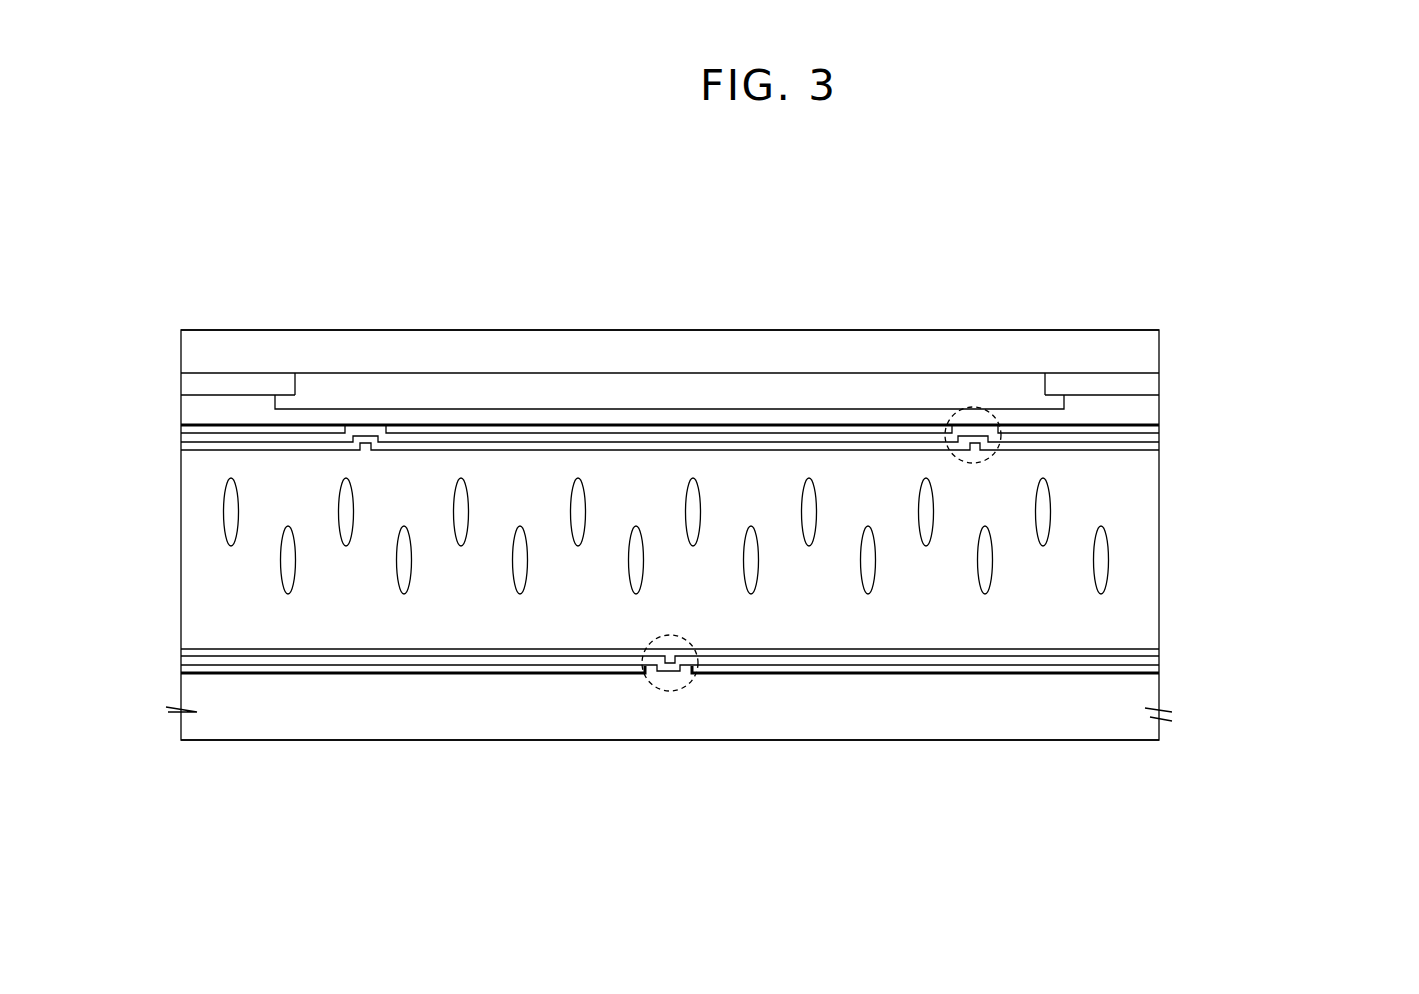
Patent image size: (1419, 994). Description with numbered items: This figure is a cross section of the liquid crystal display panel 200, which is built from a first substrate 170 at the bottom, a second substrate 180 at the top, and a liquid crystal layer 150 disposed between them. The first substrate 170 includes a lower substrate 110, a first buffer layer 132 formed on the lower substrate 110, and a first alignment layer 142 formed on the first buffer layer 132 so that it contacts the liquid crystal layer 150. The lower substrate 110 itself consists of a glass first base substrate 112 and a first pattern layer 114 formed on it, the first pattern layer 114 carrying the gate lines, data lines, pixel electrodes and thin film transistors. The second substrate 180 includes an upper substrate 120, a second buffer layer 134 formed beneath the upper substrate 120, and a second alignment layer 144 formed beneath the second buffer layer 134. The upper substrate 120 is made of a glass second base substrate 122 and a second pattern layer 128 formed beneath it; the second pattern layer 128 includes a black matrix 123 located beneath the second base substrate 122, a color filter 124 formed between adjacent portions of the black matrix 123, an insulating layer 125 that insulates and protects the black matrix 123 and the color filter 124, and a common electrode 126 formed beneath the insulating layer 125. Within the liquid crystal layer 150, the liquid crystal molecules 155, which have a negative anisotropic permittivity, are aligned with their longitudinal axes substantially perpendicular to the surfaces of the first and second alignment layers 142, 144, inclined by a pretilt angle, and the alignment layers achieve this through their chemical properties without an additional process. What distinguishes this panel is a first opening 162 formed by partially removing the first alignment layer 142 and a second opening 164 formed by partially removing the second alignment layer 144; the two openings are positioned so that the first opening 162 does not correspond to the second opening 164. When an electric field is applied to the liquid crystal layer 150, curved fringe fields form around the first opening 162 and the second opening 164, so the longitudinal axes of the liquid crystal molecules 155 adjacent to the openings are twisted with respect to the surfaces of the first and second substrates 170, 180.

The liquid crystal display panel 200 is at (746, 221).
The second substrate 180 is at (1351, 315).
The upper substrate 120 is at (1299, 315).
The second base substrate 122 is at (1150, 347).
The color filter 124 is at (1028, 390).
The second pattern layer 128 is at (1244, 342).
The black matrix 123 is at (1159, 377).
The insulating layer 125 is at (1159, 401).
The common electrode 126 is at (1159, 427).
The second buffer layer 134 is at (1159, 436).
The second alignment layer 144 is at (1159, 446).
The second opening 164 is at (970, 407).
The liquid crystal layer 150 is at (129, 452).
The liquid crystal molecules 155 is at (229, 512).
The first substrate 170 is at (1297, 625).
The first alignment layer 142 is at (1159, 649).
The first buffer layer 132 is at (1159, 656).
The lower substrate 110 is at (1246, 680).
The first pattern layer 114 is at (1159, 667).
The first base substrate 112 is at (1159, 718).
The first opening 162 is at (670, 692).